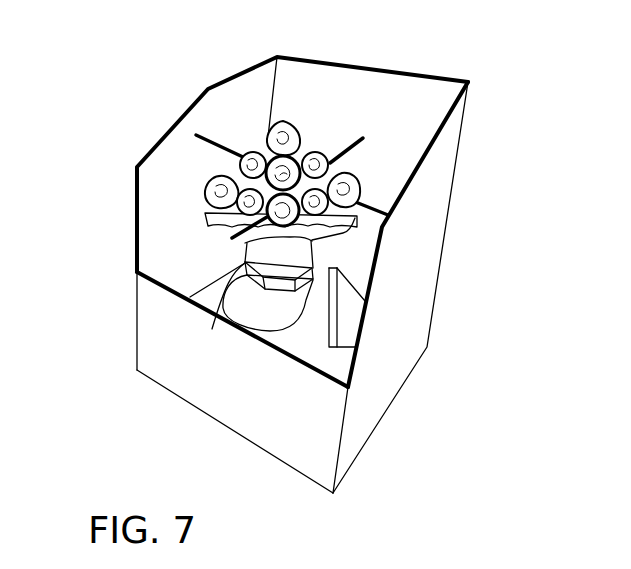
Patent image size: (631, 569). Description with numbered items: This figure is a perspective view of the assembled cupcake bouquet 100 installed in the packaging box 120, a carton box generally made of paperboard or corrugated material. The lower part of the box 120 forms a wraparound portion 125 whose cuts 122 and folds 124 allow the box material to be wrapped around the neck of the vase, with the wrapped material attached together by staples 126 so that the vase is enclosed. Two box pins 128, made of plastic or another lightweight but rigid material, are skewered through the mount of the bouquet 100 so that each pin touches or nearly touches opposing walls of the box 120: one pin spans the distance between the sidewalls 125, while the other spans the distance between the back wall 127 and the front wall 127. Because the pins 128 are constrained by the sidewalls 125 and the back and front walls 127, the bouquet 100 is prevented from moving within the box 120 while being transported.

The cupcake bouquet 100 is at (352, 106).
The packaging box 120 is at (455, 165).
The cuts 122 is at (222, 298).
The folds 124 is at (330, 362).
The sidewalls 125 is at (208, 266).
The staples 126 is at (343, 337).
The back wall and front wall 127 is at (433, 106).
The box pins 128 is at (196, 135).